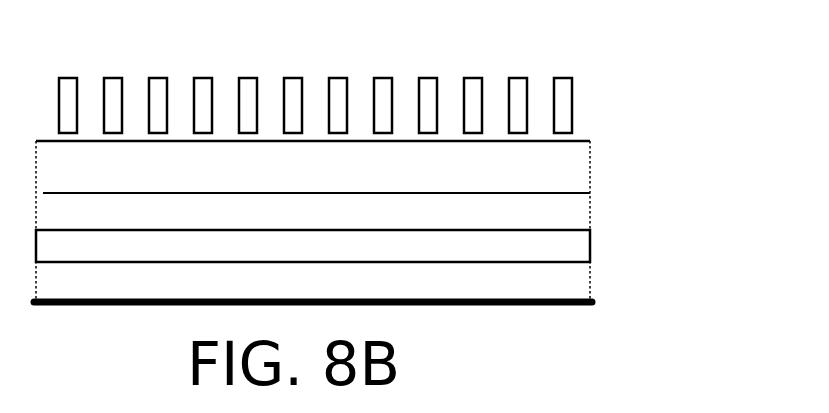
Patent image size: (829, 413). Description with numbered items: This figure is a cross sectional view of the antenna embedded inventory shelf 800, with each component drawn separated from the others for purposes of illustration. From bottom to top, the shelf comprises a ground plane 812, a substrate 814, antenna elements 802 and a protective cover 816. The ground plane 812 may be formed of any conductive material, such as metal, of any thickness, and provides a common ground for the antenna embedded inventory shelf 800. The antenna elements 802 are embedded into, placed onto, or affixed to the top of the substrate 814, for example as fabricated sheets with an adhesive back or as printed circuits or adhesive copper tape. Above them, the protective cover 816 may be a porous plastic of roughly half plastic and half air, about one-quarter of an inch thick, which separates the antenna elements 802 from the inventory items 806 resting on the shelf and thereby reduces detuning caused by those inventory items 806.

The antenna embedded inventory shelf 800 is at (678, 190).
The antenna elements 802 is at (580, 190).
The inventory items 806 is at (110, 78).
The ground plane 812 is at (590, 298).
The substrate 814 is at (590, 248).
The protective cover 816 is at (590, 141).